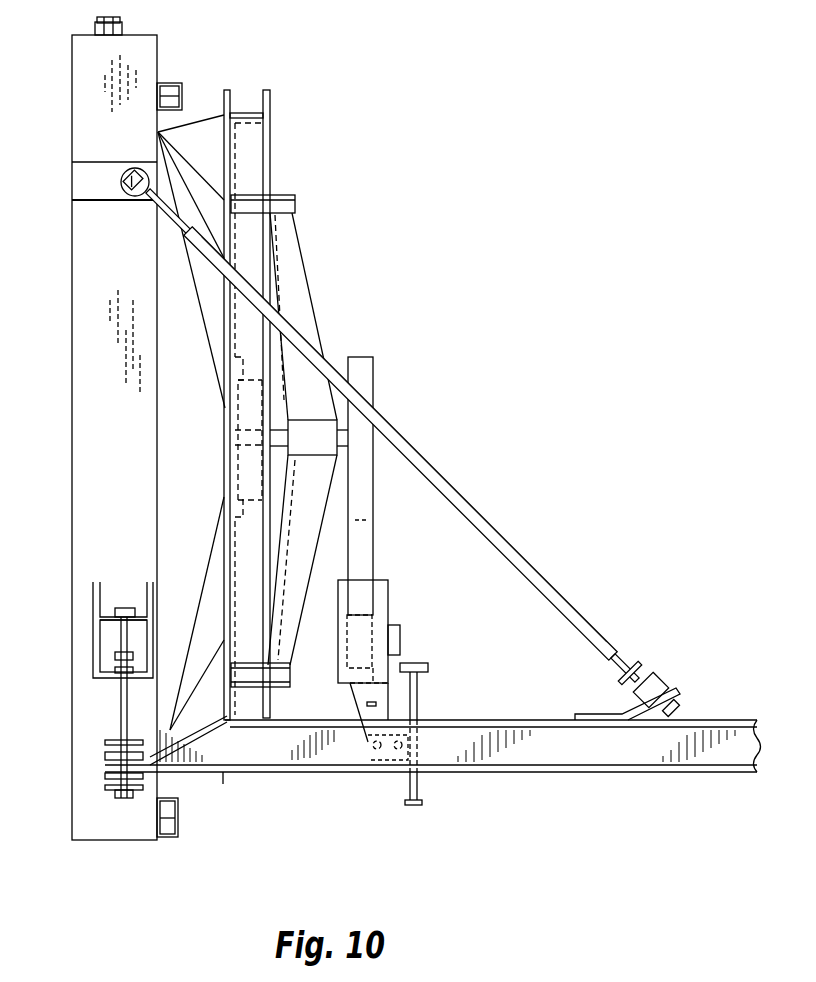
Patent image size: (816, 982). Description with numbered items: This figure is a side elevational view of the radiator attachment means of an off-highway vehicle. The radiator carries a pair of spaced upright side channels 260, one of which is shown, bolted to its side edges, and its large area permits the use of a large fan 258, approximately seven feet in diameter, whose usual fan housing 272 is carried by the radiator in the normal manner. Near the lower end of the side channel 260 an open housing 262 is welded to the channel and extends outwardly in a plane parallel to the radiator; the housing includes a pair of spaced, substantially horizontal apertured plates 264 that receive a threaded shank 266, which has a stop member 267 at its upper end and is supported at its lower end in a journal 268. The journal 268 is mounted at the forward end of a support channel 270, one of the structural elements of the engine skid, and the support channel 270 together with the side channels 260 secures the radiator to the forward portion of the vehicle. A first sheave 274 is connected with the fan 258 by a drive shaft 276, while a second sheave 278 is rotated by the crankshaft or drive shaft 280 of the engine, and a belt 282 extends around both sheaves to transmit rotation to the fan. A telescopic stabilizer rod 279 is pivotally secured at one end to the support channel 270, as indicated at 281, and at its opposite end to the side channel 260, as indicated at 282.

The fan 258 is at (293, 258).
The side channel 260 is at (140, 362).
The open housing 262 is at (93, 632).
The apertured plate 264 is at (105, 680).
The threaded shank 266 is at (105, 612).
The stop member 267 is at (126, 609).
The journal 268 is at (110, 773).
The support channel 270 is at (352, 770).
The fan housing 272 is at (224, 458).
The first sheave 274 is at (360, 504).
The drive shaft 276 is at (372, 434).
The second sheave 278 is at (352, 655).
The telescopic stabilizer rod 279 is at (508, 541).
The crankshaft or drive shaft 280 is at (400, 638).
The pivotal connection 281 is at (666, 674).
The belt 282 is at (137, 197).